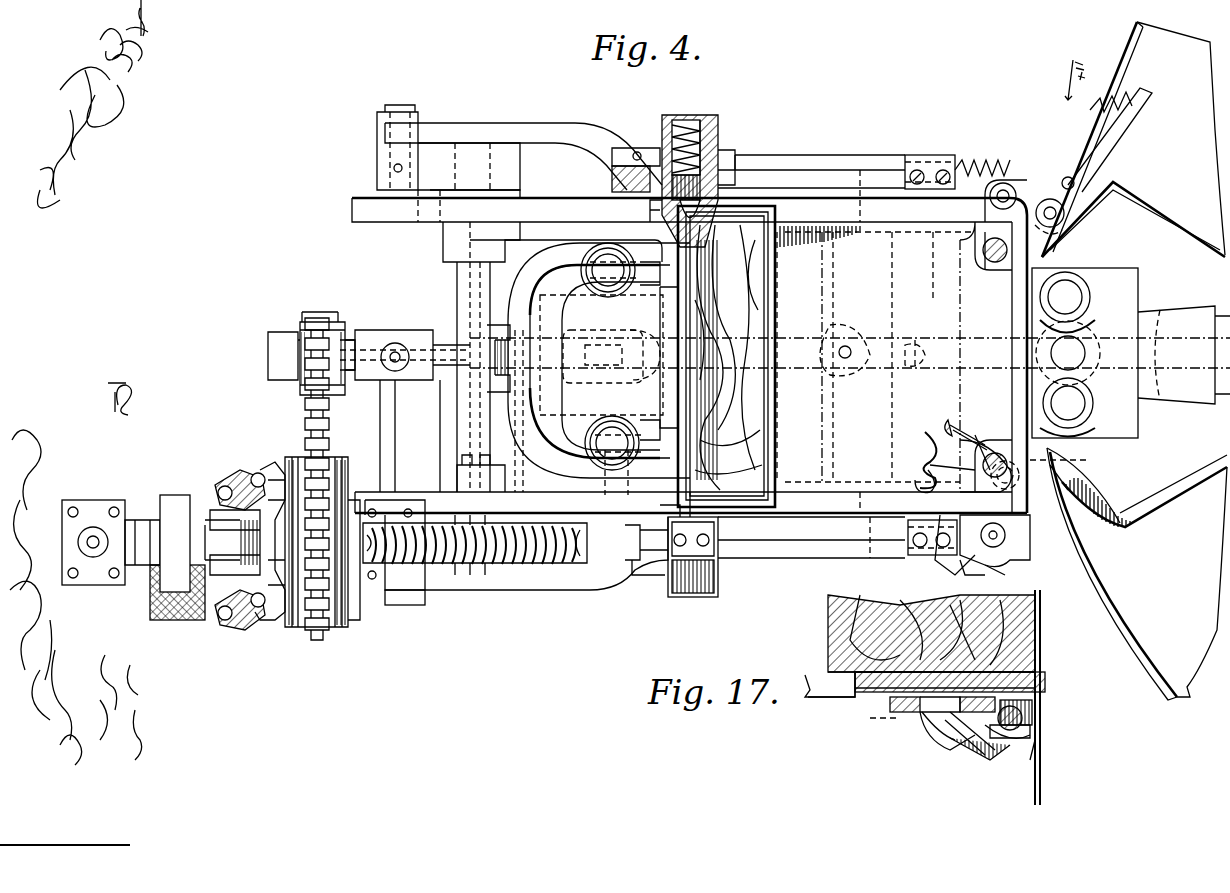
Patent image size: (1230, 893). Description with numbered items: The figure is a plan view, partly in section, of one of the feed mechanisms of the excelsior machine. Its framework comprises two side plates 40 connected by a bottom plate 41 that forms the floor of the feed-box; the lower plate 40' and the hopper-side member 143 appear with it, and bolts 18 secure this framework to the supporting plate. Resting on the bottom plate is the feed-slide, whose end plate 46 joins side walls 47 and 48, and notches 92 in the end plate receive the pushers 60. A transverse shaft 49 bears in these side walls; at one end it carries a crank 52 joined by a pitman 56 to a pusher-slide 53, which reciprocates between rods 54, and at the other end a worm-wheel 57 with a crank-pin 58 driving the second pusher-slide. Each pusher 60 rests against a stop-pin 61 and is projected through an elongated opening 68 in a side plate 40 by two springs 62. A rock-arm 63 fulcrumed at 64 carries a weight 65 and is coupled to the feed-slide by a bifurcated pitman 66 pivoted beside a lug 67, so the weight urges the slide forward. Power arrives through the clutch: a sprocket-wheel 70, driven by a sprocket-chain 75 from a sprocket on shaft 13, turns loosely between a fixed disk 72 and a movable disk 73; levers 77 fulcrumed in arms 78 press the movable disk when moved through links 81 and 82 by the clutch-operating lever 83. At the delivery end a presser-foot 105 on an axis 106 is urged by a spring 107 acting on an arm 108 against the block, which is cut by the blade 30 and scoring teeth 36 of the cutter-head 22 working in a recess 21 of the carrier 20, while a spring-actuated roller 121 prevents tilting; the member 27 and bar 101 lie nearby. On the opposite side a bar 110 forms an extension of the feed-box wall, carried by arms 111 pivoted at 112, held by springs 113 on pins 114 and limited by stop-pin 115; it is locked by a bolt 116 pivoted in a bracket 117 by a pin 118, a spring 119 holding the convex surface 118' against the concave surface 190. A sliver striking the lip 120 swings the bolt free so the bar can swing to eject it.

In FIG. 4, the shaft 13 is at (270, 362).
In FIG. 4, the bolts 18 is at (1000, 430).
In FIG. 4, the carrier 20 is at (1152, 665).
In FIG. 4, the recesses 21 is at (1160, 240).
In FIG. 4, the cutter-head 22 is at (1135, 292).
In FIG. 4, the gear 27 is at (1065, 300).
In FIG. 4, the blade 30 is at (1035, 338).
In FIG. 4, the scoring teeth 36 is at (1035, 368).
In FIG. 4, the side plates 40 is at (682, 354).
In FIG. 4, the lower frame bar 40' is at (691, 501).
In FIG. 4, the bottom plate 41 is at (635, 300).
In FIG. 4, the end plate 46 is at (668, 385).
In FIG. 4, the side wall 47 is at (530, 225).
In FIG. 4, the side wall 48 is at (500, 483).
In FIG. 4, the transverse shaft 49 is at (460, 285).
In FIG. 4, the crank 52 is at (438, 150).
In FIG. 4, the pusher-slide 53 is at (722, 132).
In FIG. 4, the rod 54 is at (890, 170).
In FIG. 4, the pitman 56 is at (540, 128).
In FIG. 4, the worm-wheel 57 is at (492, 575).
In FIG. 4, the crank-pin 58 is at (418, 602).
In FIG. 4, the pusher 60 is at (690, 232).
In FIG. 4, the stop-pin 61 is at (735, 220).
In FIG. 4, the springs 62 is at (700, 130).
In FIG. 4, the rock-arm 63 is at (648, 280).
In FIG. 4, the fulcrum 64 is at (510, 398).
In FIG. 4, the weight 65 is at (830, 288).
In FIG. 4, the bifurcated pitman 66 is at (508, 292).
In FIG. 4, the lug 67 is at (590, 285).
In FIG. 4, the elongated opening 68 is at (850, 552).
In FIG. 4, the sprocket-wheel 70 is at (335, 630).
In FIG. 4, the fixed disk 72 is at (350, 600).
In FIG. 4, the movable disk 73 is at (292, 628).
In FIG. 4, the sprocket-chain 75 is at (360, 415).
In FIG. 4, the levers 77 is at (278, 462).
In FIG. 4, the arm 78 is at (975, 275).
In FIG. 4, the link 81 is at (215, 480).
In FIG. 4, the link 82 is at (220, 505).
In FIG. 4, the clutch-operating lever 83 is at (160, 622).
In FIG. 4, the notches 92 is at (720, 222).
In FIG. 4, the bar 101 is at (845, 170).
In FIG. 4, the presser-foot 105 is at (1100, 190).
In FIG. 4, the axis 106 is at (1012, 185).
In FIG. 4, the spring 107 is at (968, 160).
In FIG. 4, the arm 108 is at (1012, 175).
In FIG. 4, the bar 110 is at (1075, 480).
In FIG. 17, the bar 110 is at (1030, 697).
In FIG. 4, the arms 111 is at (1080, 465).
In FIG. 17, the arms 111 is at (1035, 670).
In FIG. 4, the pivot 112 is at (972, 414).
In FIG. 17, the pivot 112 is at (1038, 635).
In FIG. 4, the springs 113 is at (928, 442).
In FIG. 17, the springs 113 is at (923, 624).
In FIG. 4, the projecting pins 114 is at (948, 425).
In FIG. 17, the projecting pins 114 is at (985, 624).
In FIG. 4, the stop-pin 115 is at (925, 468).
In FIG. 4, the bolt 116 is at (998, 540).
In FIG. 17, the bolt 116 is at (1015, 735).
In FIG. 4, the bracket 117 is at (1000, 480).
In FIG. 17, the bracket 117 is at (920, 715).
In FIG. 4, the pin 118 is at (1053, 541).
In FIG. 17, the pin 118 is at (1052, 711).
In FIG. 17, the convex surface 118' is at (1051, 723).
In FIG. 4, the spring 119 is at (965, 560).
In FIG. 17, the spring 119 is at (955, 745).
In FIG. 4, the lip 120 is at (1062, 528).
In FIG. 17, the lip 120 is at (1035, 745).
In FIG. 4, the roller 121 is at (1066, 220).
In FIG. 4, the table 143 is at (780, 440).
In FIG. 17, the concave surface 190 is at (880, 720).